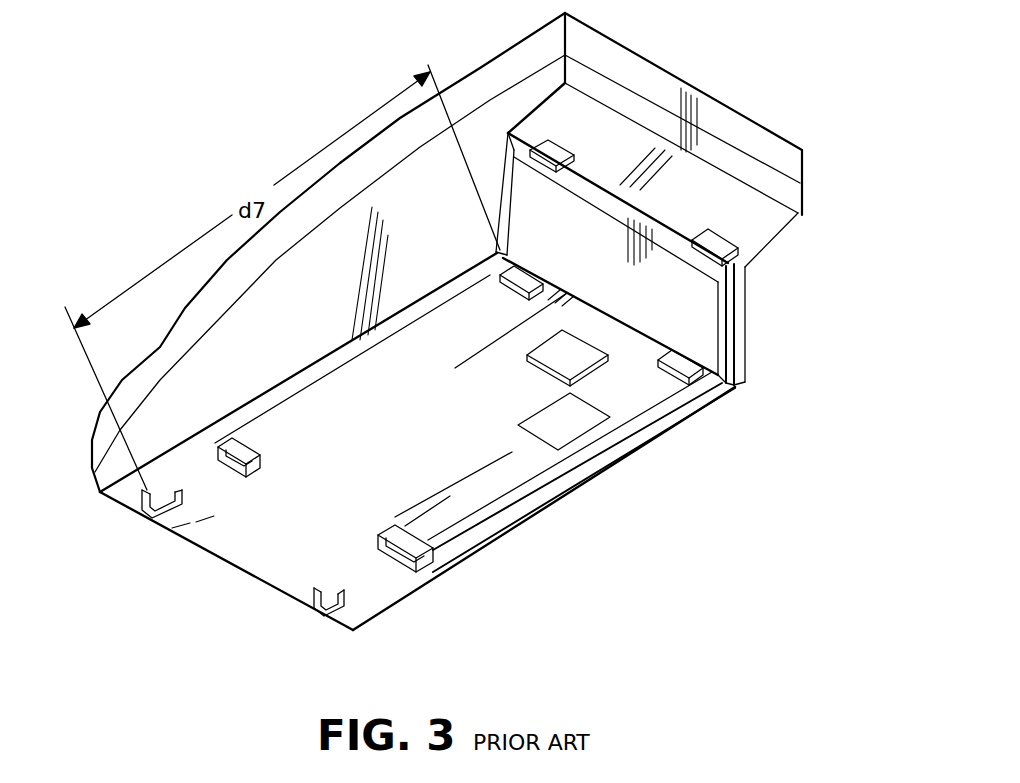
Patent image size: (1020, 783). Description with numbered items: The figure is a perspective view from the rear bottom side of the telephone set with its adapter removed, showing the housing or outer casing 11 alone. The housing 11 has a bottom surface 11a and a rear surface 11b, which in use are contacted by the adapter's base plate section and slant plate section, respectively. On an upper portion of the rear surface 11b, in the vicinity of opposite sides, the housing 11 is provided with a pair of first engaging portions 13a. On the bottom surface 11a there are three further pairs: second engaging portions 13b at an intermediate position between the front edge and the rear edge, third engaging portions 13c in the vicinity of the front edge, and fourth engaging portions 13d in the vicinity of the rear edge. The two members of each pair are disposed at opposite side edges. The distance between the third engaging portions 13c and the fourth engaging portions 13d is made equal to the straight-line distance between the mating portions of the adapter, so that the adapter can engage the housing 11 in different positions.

The housing 11 is at (498, 68).
The bottom surface 11a is at (463, 457).
The rear surface 11b is at (700, 303).
The first engaging portions 13a is at (557, 157).
The second engaging portions 13b is at (233, 477).
The third engaging portions 13c is at (152, 520).
The fourth engaging portions 13d is at (695, 362).